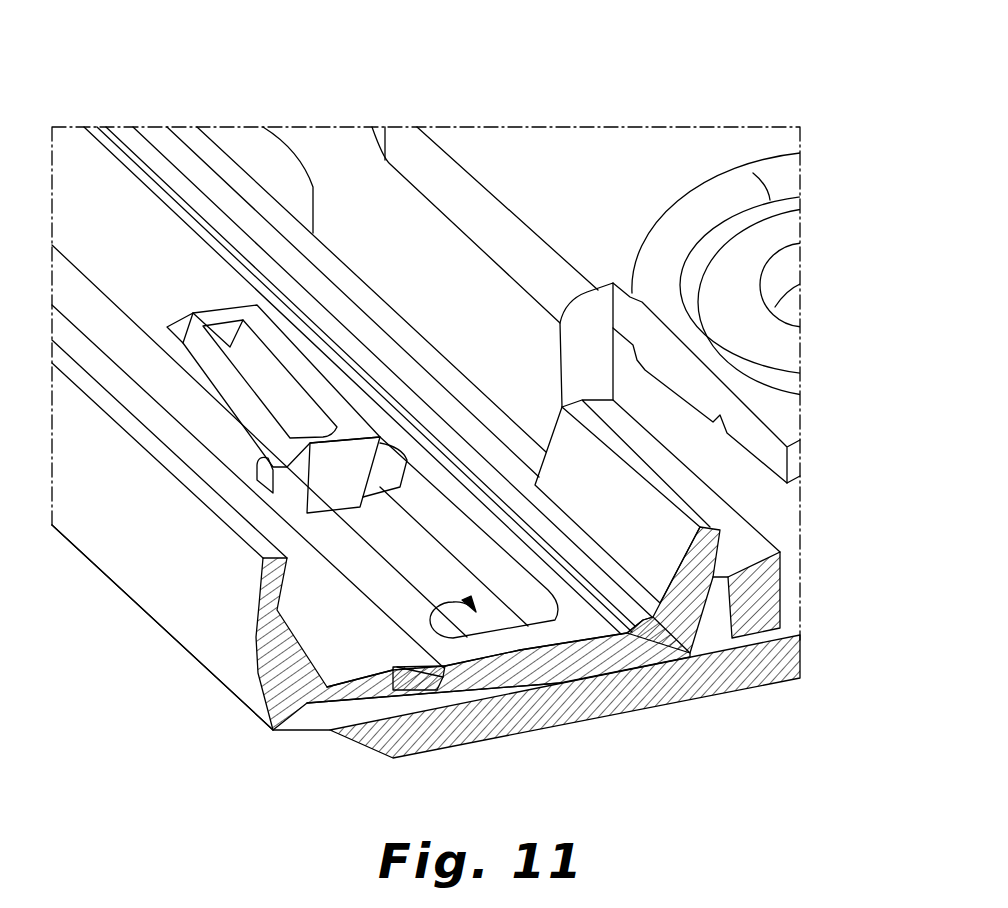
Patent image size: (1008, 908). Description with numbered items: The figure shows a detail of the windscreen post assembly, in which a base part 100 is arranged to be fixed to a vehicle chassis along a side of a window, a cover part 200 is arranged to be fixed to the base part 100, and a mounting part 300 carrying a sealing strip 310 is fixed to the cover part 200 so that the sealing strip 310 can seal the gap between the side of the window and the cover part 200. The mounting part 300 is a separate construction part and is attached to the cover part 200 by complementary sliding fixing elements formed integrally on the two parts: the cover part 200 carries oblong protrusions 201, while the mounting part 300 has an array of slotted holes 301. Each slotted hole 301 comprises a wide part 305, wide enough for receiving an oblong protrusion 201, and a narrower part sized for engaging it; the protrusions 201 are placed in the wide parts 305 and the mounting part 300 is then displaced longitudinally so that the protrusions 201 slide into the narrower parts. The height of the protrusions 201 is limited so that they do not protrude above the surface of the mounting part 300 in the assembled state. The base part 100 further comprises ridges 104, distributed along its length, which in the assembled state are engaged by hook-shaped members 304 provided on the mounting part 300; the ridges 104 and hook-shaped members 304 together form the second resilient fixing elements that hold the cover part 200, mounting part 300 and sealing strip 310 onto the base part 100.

The base part 100 is at (580, 207).
The ridges 104 is at (765, 597).
The cover part 200 is at (705, 680).
The oblong protrusions 201 is at (278, 342).
The mounting part 300 is at (126, 200).
The slotted holes 301 is at (430, 688).
The hook-shaped members 304 is at (653, 533).
The wide part 305 is at (523, 590).
The sealing strip 310 is at (213, 565).